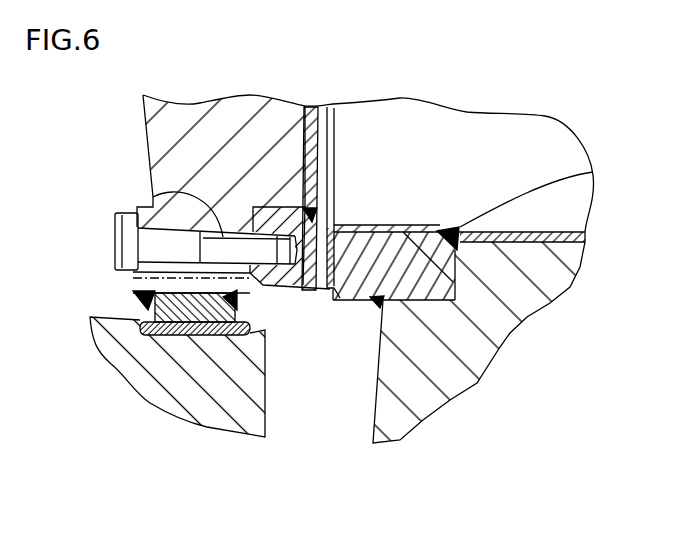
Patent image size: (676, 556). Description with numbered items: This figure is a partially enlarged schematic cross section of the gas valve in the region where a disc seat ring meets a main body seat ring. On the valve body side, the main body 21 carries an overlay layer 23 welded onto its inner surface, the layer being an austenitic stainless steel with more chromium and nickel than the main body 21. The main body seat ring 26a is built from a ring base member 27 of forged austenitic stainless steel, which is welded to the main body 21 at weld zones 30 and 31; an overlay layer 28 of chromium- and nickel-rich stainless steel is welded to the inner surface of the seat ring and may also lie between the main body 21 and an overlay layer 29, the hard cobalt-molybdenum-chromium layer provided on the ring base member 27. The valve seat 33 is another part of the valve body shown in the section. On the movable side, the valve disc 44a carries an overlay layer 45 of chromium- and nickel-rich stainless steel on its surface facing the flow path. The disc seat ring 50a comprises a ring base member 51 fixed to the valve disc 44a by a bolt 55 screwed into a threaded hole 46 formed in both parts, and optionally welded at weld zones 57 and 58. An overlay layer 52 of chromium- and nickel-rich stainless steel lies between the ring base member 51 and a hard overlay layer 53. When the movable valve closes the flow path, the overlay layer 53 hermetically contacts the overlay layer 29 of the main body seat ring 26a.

The valve disc 44a is at (167, 148).
The threaded hole 46 is at (208, 212).
The bolt 55 is at (118, 233).
The weld zone 58 is at (133, 272).
The valve seat 33 is at (127, 365).
The ring base member 51 is at (277, 290).
The overlay layer 52 is at (300, 290).
The overlay layer 53 is at (320, 290).
The overlay layer 45 is at (330, 108).
The weld zone 57 is at (320, 207).
The overlay layer 29 is at (333, 300).
The overlay layer 28 is at (340, 300).
The ring base member 27 is at (410, 273).
The weld zone 30 is at (545, 181).
The overlay layer 23 is at (560, 228).
The main body 21 is at (523, 303).
The weld zone 31 is at (376, 300).
The disc seat ring 50a is at (295, 490).
The main body seat ring 26a is at (423, 490).